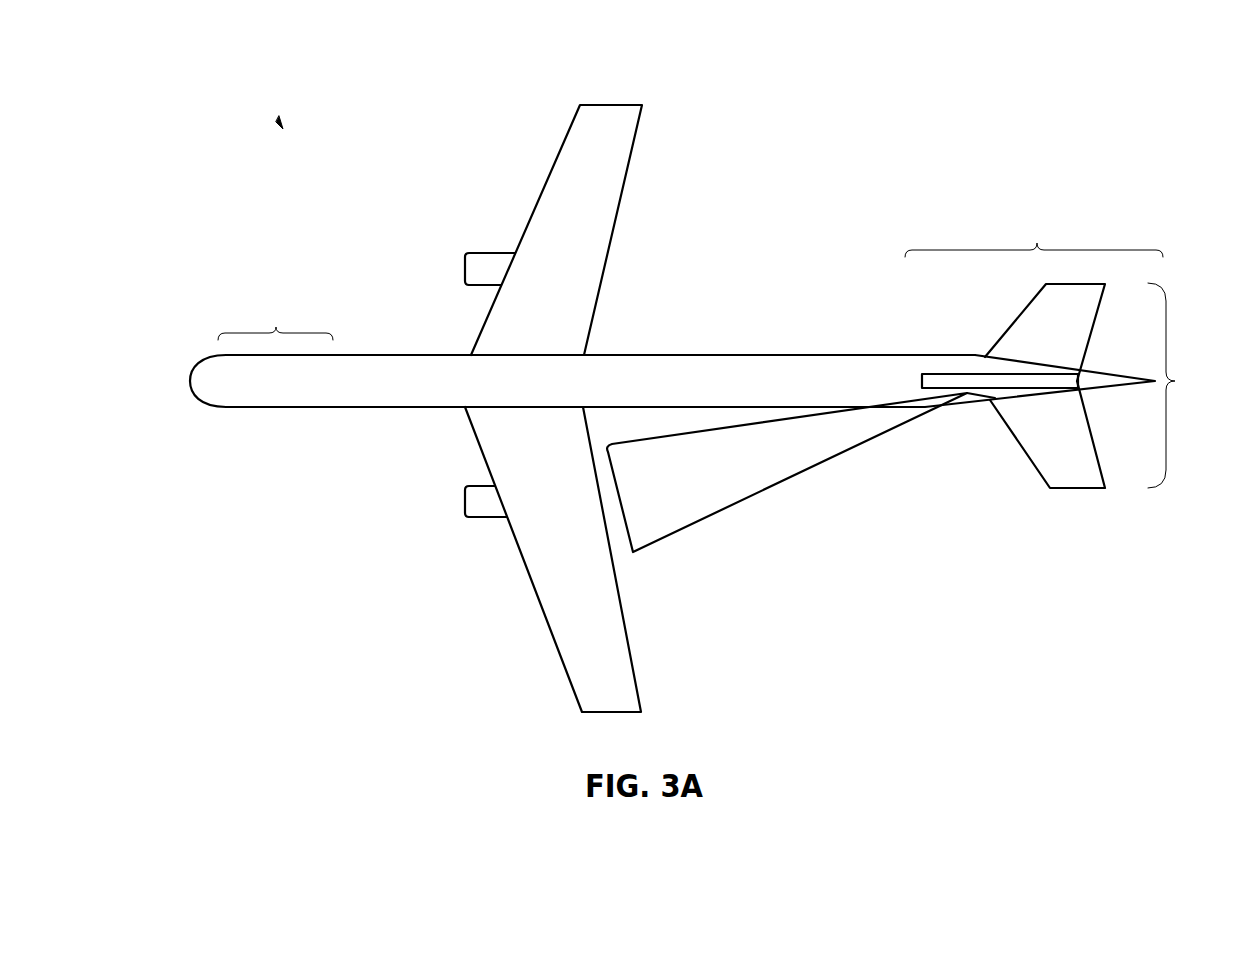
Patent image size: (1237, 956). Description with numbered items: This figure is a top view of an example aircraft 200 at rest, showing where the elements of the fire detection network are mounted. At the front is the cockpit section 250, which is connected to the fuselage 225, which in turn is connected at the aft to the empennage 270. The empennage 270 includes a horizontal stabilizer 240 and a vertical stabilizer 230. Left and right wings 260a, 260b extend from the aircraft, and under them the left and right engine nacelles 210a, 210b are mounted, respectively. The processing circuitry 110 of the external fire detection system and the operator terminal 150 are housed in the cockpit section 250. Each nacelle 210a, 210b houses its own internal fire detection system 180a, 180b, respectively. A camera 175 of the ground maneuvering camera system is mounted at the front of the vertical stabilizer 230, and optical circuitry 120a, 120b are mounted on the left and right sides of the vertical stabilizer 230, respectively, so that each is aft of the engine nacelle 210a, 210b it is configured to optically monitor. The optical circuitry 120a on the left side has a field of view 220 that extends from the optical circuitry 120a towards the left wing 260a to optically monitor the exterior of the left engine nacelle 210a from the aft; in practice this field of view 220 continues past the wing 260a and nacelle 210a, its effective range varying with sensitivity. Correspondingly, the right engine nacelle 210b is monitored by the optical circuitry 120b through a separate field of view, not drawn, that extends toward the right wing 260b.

The aircraft 200 is at (277, 121).
The processing circuitry 110 is at (312, 384).
The operator terminal 150 is at (246, 384).
The cockpit section 250 is at (275, 321).
The fuselage 225 is at (802, 354).
The left wing 260a is at (625, 618).
The right wing 260b is at (625, 177).
The internal fire detection system 180a is at (478, 507).
The internal fire detection system 180b is at (482, 263).
The left engine nacelle 210a is at (465, 493).
The right engine nacelle 210b is at (477, 287).
The field of view 220 is at (735, 490).
The camera 175 is at (921, 375).
The vertical stabilizer 230 is at (1052, 366).
The optical circuitry 120a is at (968, 394).
The optical circuitry 120b is at (967, 374).
The empennage 270 is at (1034, 237).
The horizontal stabilizer 240 is at (1191, 385).